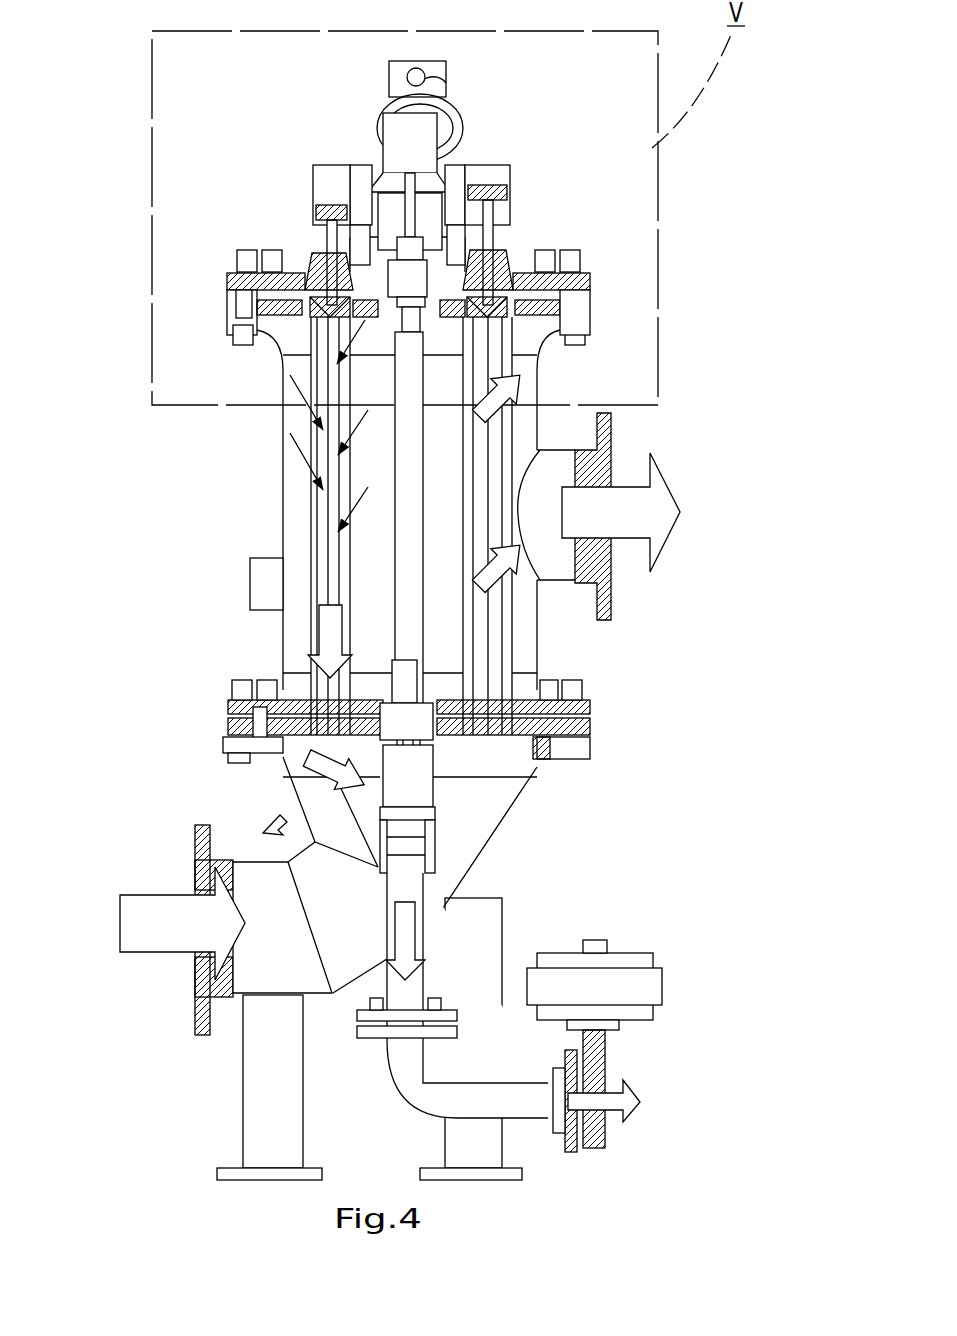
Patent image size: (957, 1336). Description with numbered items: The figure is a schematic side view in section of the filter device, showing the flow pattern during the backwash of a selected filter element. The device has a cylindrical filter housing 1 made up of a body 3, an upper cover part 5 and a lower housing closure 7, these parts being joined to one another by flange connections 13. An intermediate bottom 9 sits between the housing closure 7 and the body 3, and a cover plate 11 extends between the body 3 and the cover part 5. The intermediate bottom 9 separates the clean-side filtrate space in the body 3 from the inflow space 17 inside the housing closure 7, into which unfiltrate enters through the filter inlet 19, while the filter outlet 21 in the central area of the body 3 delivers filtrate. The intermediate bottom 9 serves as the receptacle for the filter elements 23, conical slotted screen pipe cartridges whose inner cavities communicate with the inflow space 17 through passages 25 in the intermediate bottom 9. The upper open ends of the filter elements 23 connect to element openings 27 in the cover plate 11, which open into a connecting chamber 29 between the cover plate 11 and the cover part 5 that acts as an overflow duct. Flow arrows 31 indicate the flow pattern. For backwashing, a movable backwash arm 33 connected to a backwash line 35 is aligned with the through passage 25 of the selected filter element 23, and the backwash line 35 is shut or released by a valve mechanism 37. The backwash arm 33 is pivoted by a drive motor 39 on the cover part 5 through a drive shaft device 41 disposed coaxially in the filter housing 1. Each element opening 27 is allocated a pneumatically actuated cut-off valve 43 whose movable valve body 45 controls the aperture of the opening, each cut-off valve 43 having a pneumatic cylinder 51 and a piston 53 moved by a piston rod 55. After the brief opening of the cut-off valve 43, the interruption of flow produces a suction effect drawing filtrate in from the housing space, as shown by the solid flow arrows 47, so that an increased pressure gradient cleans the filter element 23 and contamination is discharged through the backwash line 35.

The filter housing 1 is at (180, 545).
The body 3 is at (283, 540).
The cover part 5 is at (240, 283).
The housing closure 7 is at (290, 770).
The intermediate bottom 9 is at (535, 757).
The cover plate 11 is at (322, 320).
The flange connections 13 is at (556, 310).
The inflow space 17 is at (369, 828).
The filter inlet 19 is at (200, 862).
The filter outlet 21 is at (600, 470).
The filter elements 23 is at (330, 535).
The through passages 25 is at (227, 747).
The element openings 27 is at (318, 306).
The connecting chamber 29 is at (555, 265).
The flow arrows 31 is at (520, 398).
The backwash arm 33 is at (320, 790).
The backwash line 35 is at (423, 972).
The valve mechanism 37 is at (605, 1062).
The drive motor 39 is at (447, 138).
The drive shaft device 41 is at (283, 582).
The cut-off valve 43 is at (300, 163).
The valve body 45 is at (360, 292).
The flow arrows 47 is at (358, 340).
The pneumatic cylinder 51 is at (332, 185).
The piston 53 is at (313, 212).
The piston rod 55 is at (320, 265).